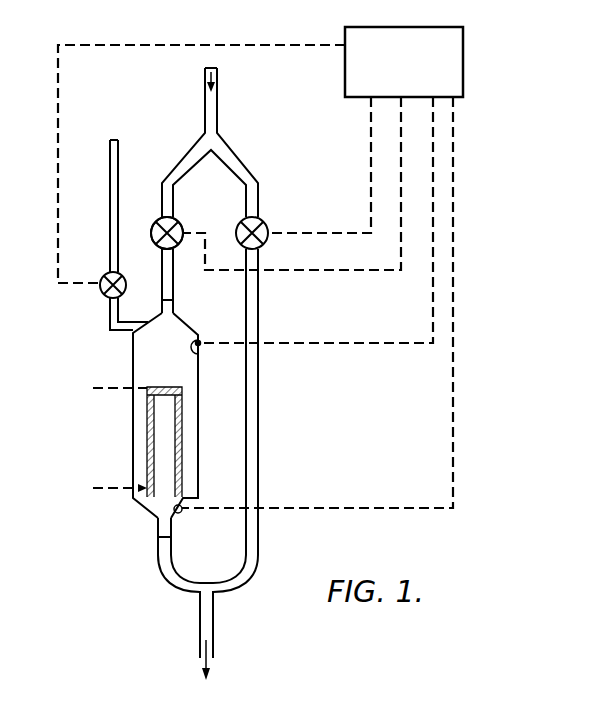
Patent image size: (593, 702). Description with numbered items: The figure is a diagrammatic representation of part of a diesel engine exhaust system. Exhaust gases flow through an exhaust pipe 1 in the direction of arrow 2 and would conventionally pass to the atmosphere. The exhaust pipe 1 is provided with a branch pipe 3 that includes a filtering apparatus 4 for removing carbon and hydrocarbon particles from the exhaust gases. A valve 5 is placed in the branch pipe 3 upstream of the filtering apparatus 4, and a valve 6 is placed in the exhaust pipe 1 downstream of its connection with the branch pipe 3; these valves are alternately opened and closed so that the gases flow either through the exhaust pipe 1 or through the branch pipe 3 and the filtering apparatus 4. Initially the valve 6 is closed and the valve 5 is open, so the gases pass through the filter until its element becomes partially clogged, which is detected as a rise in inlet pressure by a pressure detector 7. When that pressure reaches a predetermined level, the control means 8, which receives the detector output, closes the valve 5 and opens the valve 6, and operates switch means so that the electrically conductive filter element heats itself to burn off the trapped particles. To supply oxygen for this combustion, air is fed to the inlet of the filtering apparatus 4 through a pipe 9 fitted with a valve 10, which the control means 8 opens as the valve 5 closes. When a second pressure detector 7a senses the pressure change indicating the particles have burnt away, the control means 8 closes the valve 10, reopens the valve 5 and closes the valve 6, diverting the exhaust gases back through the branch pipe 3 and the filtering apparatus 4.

The exhaust pipe 1 is at (222, 111).
The arrow 2 is at (211, 68).
The branch pipe 3 is at (203, 210).
The filtering apparatus 4 is at (124, 368).
The valve 5 is at (153, 226).
The valve 6 is at (267, 225).
The pressure detector 7 is at (201, 354).
The second pressure detector 7a is at (181, 513).
The control means 8 is at (409, 75).
The pipe 9 is at (110, 190).
The valve 10 is at (104, 297).